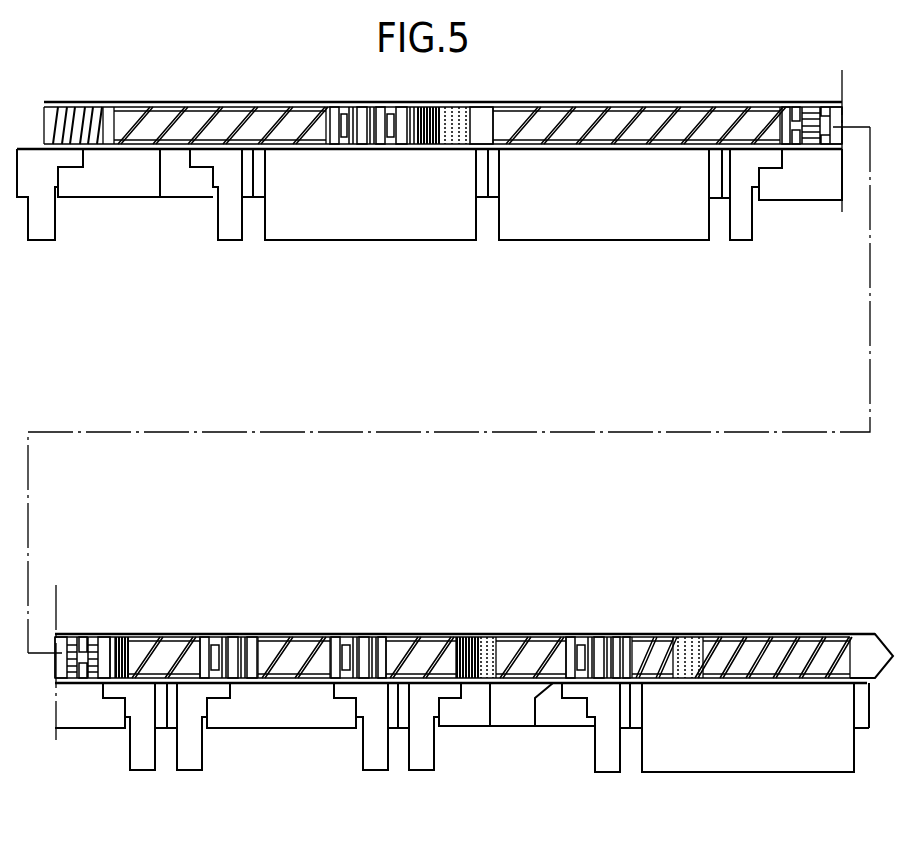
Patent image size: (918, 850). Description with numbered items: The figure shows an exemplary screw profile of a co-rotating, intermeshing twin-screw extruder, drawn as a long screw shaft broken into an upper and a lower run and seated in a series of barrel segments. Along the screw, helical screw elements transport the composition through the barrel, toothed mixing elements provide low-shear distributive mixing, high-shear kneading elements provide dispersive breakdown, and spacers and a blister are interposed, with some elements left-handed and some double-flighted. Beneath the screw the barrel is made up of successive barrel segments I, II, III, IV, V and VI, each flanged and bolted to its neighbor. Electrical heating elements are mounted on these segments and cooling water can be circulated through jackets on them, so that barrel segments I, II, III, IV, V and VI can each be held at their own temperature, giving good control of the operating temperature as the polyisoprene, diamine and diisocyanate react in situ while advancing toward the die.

The barrel segment I is at (359, 223).
The barrel segment II is at (592, 223).
The barrel segment III is at (448, 488).
The barrel segment IV is at (293, 755).
The barrel segment V is at (525, 755).
The barrel segment VI is at (755, 755).